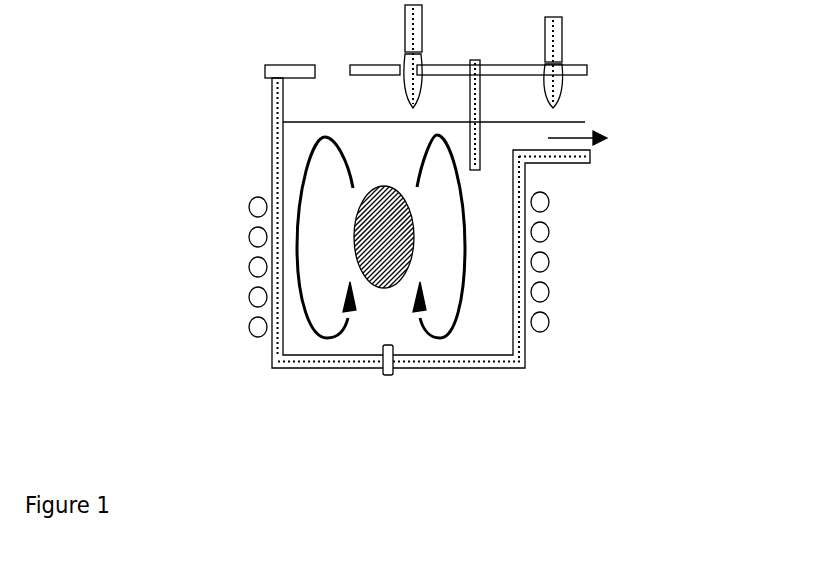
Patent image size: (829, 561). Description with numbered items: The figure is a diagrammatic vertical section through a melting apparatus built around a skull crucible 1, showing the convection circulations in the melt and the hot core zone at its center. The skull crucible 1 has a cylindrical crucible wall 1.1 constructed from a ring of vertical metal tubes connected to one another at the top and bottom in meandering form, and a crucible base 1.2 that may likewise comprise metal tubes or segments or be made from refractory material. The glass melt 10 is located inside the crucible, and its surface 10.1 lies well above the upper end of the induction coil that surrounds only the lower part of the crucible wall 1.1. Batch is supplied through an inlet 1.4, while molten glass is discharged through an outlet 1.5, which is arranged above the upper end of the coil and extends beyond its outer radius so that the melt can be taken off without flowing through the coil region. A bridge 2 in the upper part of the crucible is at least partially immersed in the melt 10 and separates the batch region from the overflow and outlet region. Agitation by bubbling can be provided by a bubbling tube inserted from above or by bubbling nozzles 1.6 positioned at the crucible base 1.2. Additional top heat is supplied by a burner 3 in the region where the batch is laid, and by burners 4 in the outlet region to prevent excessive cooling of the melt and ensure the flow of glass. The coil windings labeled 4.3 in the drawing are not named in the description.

The skull crucible 1 is at (273, 103).
The crucible wall 1.1 is at (523, 172).
The crucible base 1.2 is at (420, 367).
The inlet 1.4 is at (305, 37).
The outlet 1.5 is at (577, 123).
The bubbling nozzles 1.6 is at (380, 368).
The bridge 2 is at (480, 62).
The burner 3 is at (422, 33).
The burners 4 is at (562, 47).
The induction coil 4.3 is at (545, 297).
The glass melt 10 is at (381, 236).
The surface of the glass melt 10.1 is at (348, 122).